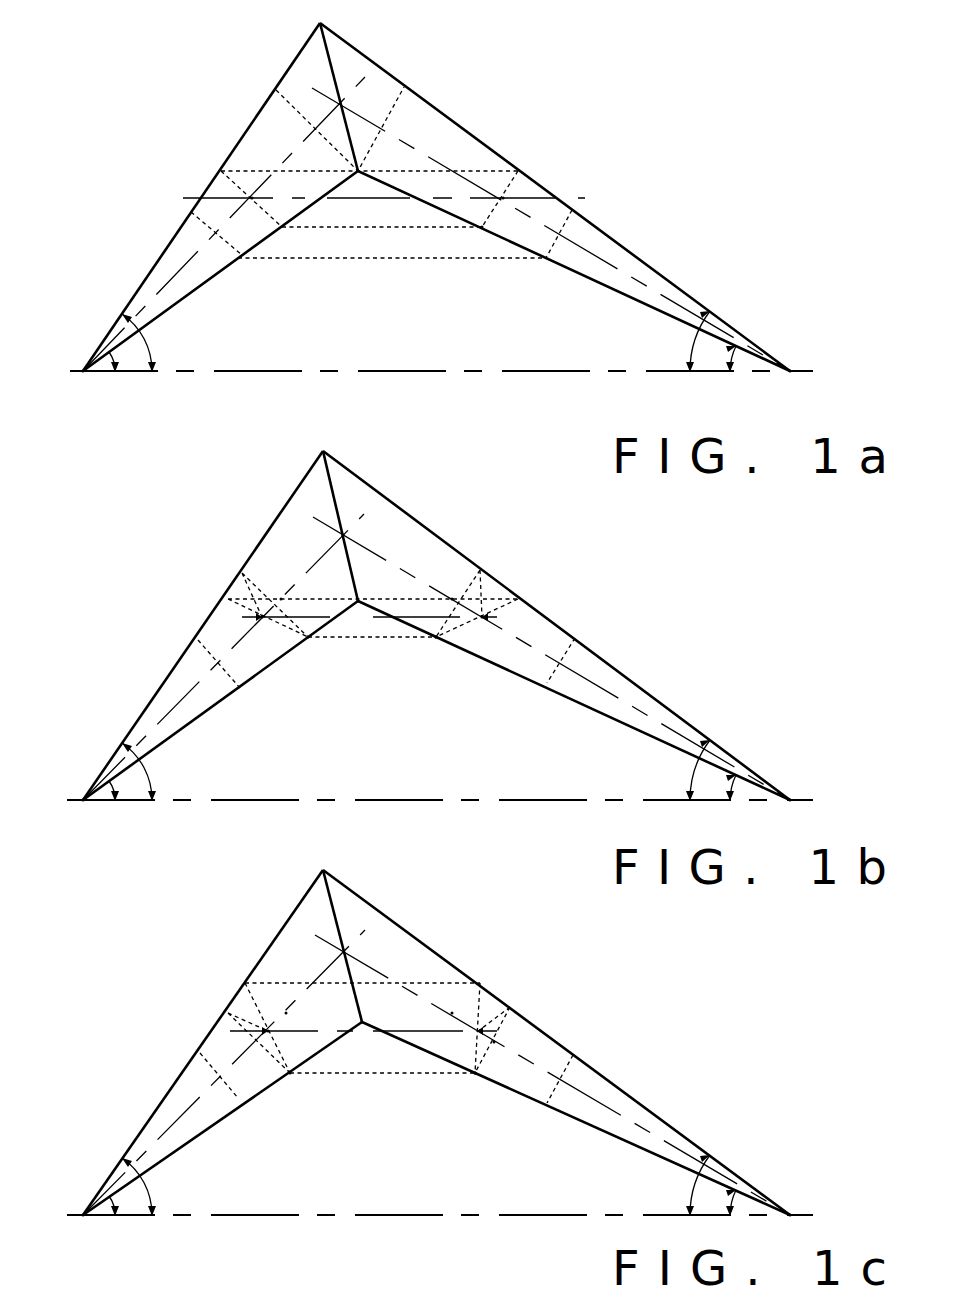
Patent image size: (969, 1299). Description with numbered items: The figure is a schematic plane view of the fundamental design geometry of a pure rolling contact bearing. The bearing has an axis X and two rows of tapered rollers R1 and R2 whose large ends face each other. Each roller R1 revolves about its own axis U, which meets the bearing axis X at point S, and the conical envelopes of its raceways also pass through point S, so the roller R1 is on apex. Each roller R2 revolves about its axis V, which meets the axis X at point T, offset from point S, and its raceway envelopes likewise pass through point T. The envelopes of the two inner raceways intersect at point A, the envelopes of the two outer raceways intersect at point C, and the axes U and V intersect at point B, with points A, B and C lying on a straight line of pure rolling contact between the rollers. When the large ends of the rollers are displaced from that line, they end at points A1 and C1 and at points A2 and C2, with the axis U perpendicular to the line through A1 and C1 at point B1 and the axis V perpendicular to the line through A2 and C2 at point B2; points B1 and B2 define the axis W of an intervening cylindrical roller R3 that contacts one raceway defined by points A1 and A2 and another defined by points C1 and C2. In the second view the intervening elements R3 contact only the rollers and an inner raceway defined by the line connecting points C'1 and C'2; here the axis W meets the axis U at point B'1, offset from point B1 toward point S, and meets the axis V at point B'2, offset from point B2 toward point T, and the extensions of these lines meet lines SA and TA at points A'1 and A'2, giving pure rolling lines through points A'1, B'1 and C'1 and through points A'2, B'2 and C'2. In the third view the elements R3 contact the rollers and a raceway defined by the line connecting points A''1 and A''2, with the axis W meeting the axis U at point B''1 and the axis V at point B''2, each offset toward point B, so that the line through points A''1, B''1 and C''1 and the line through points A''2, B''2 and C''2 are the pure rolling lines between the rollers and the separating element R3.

In FIG. 1a, the apex point S is at (82, 388).
In FIG. 1b, the apex point S is at (82, 817).
In FIG. 1c, the apex point S is at (85, 1231).
In FIG. 1a, the apex point T is at (798, 387).
In FIG. 1b, the apex point T is at (798, 816).
In FIG. 1c, the apex point T is at (798, 1231).
In FIG. 1a, the bearing axis X is at (434, 370).
In FIG. 1b, the bearing axis X is at (434, 799).
In FIG. 1c, the bearing axis X is at (434, 1214).
In FIG. 1a, the intersection point of outer raceway envelopes C is at (335, 85).
In FIG. 1b, the intersection point of outer raceway envelopes C is at (337, 510).
In FIG. 1c, the intersection point of outer raceway envelopes C is at (339, 930).
In FIG. 1a, the intersection point of inner raceway envelopes A is at (340, 130).
In FIG. 1b, the intersection point of inner raceway envelopes A is at (362, 616).
In FIG. 1c, the intersection point of inner raceway envelopes A is at (364, 1038).
In FIG. 1a, the intersection point of roller axes B is at (436, 224).
In FIG. 1b, the intersection point of roller axes B is at (436, 657).
In FIG. 1c, the intersection point of roller axes B is at (436, 1066).
In FIG. 1a, the roller axis U is at (200, 248).
In FIG. 1b, the roller axis U is at (198, 682).
In FIG. 1c, the roller axis U is at (219, 1075).
In FIG. 1a, the roller axis V is at (627, 272).
In FIG. 1b, the roller axis V is at (613, 693).
In FIG. 1c, the roller axis V is at (560, 1079).
In FIG. 1a, the axis of intervening rolling element W is at (527, 198).
In FIG. 1b, the axis of intervening rolling element W is at (321, 616).
In FIG. 1c, the axis of intervening rolling element W is at (398, 1031).
In FIG. 1a, the tapered roller R1 is at (278, 122).
In FIG. 1b, the tapered roller R1 is at (245, 668).
In FIG. 1c, the tapered roller R1 is at (250, 1093).
In FIG. 1a, the tapered roller R2 is at (448, 138).
In FIG. 1b, the tapered roller R2 is at (535, 657).
In FIG. 1c, the tapered roller R2 is at (538, 1091).
In FIG. 1a, the intervening rolling element R3 is at (380, 217).
In FIG. 1b, the intervening rolling element R3 is at (387, 577).
In FIG. 1c, the intervening rolling element R3 is at (380, 1060).
In FIG. 1a, the large-end point of roller R1 C1 is at (359, 181).
In FIG. 1b, the large-end point of roller R1 C1 is at (262, 588).
In FIG. 1c, the large-end point of roller R1 C1 is at (244, 1026).
In FIG. 1a, the large-end point of roller R2 C2 is at (511, 185).
In FIG. 1b, the large-end point of roller R2 C2 is at (477, 586).
In FIG. 1c, the large-end point of roller R2 C2 is at (509, 1027).
In FIG. 1a, the intersection point on axis U B1 is at (256, 184).
In FIG. 1b, the intersection point on axis U B1 is at (280, 598).
In FIG. 1c, the intersection point on axis U B1 is at (258, 1036).
In FIG. 1a, the intersection point on axis V B2 is at (491, 180).
In FIG. 1b, the intersection point on axis V B2 is at (461, 598).
In FIG. 1c, the intersection point on axis V B2 is at (494, 1041).
In FIG. 1a, the large-end point of roller R1 A1 is at (377, 239).
In FIG. 1b, the large-end point of roller R1 A1 is at (323, 674).
In FIG. 1c, the large-end point of roller R1 A1 is at (303, 1111).
In FIG. 1a, the large-end point of roller R2 A2 is at (498, 226).
In FIG. 1b, the large-end point of roller R2 A2 is at (440, 673).
In FIG. 1c, the large-end point of roller R2 A2 is at (481, 1111).
In FIG. 1b, the intervening inner raceway point C'1 is at (350, 599).
In FIG. 1b, the intervening inner raceway point C'2 is at (500, 599).
In FIG. 1b, the offset intersection point on axis U B'1 is at (264, 638).
In FIG. 1b, the offset intersection point on axis V B'2 is at (493, 641).
In FIG. 1b, the intersection point on line SA A'1 is at (371, 659).
In FIG. 1b, the intersection point on line TA A'2 is at (437, 655).
In FIG. 1c, the end point of pure rolling line C''1 is at (351, 1008).
In FIG. 1c, the end point of pure rolling line C''2 is at (494, 1008).
In FIG. 1c, the offset intersection point on axis U B''1 is at (292, 979).
In FIG. 1c, the offset intersection point on axis V B''2 is at (428, 978).
In FIG. 1c, the intervening raceway point A''1 is at (381, 1097).
In FIG. 1c, the intervening raceway point A''2 is at (480, 1095).